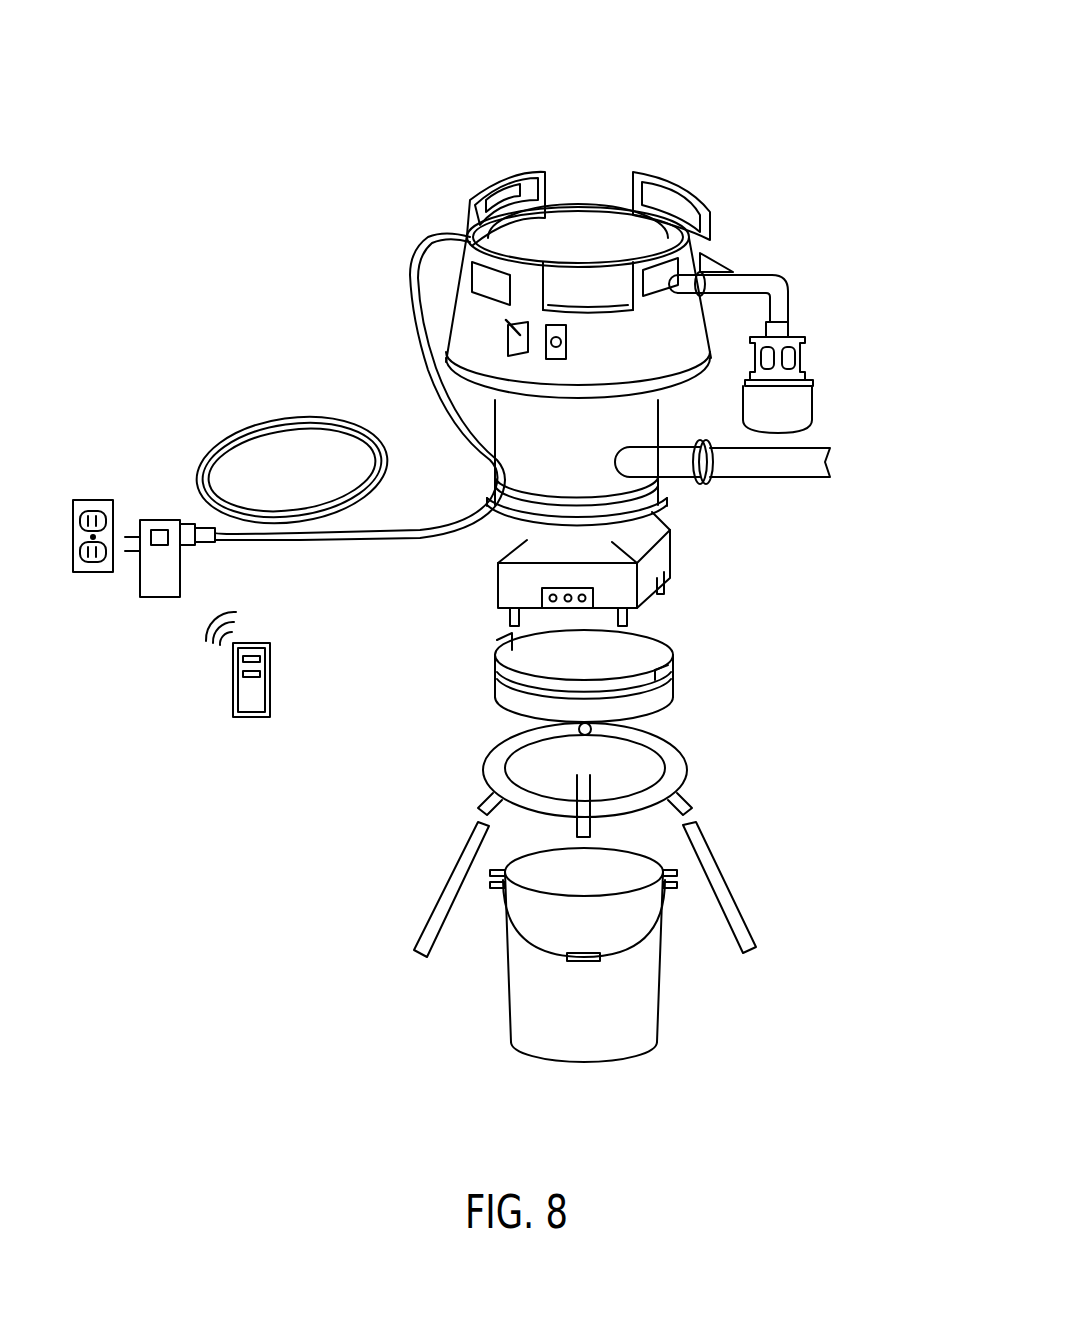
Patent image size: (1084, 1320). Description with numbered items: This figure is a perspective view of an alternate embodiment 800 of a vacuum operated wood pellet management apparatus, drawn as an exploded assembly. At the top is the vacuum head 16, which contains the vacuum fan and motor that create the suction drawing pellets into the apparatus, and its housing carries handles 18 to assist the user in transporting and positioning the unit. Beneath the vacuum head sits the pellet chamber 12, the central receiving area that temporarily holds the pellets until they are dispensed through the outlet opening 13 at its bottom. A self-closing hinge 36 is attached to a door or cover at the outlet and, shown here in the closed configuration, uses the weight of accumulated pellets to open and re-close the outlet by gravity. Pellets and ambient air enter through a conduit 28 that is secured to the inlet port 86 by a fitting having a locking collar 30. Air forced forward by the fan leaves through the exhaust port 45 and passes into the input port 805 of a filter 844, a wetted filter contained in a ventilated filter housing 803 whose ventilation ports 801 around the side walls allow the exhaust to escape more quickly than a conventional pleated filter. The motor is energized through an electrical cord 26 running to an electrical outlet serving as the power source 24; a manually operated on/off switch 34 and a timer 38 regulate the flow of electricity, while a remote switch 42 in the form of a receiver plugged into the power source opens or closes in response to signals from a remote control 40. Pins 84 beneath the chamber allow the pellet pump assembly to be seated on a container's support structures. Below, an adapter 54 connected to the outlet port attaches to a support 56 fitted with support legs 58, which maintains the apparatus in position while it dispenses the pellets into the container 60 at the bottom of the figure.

The pellet management apparatus embodiment 800 is at (748, 92).
The pellet chamber 12 is at (514, 463).
The outlet opening 13 is at (728, 666).
The vacuum head 16 is at (578, 214).
The handles 18 is at (664, 185).
The power source 24 is at (100, 498).
The electrical cord 26 is at (421, 245).
The conduit 28 is at (776, 470).
The locking collar 30 is at (707, 483).
The on/off switch 34 is at (507, 342).
The self-closing hinge 36 is at (544, 602).
The timer 38 is at (562, 350).
The remote control 40 is at (241, 703).
The remote switch 42 is at (146, 598).
The exhaust port 45 is at (723, 290).
The adapter 54 is at (669, 700).
The support 56 is at (676, 764).
The support legs 58 is at (717, 873).
The container 60 is at (638, 1028).
The pins 84 is at (629, 621).
The inlet port 86 is at (633, 460).
The ventilation ports 801 is at (803, 352).
The ventilated filter housing 803 is at (793, 418).
The input port 805 is at (786, 328).
The filter 844 is at (812, 381).